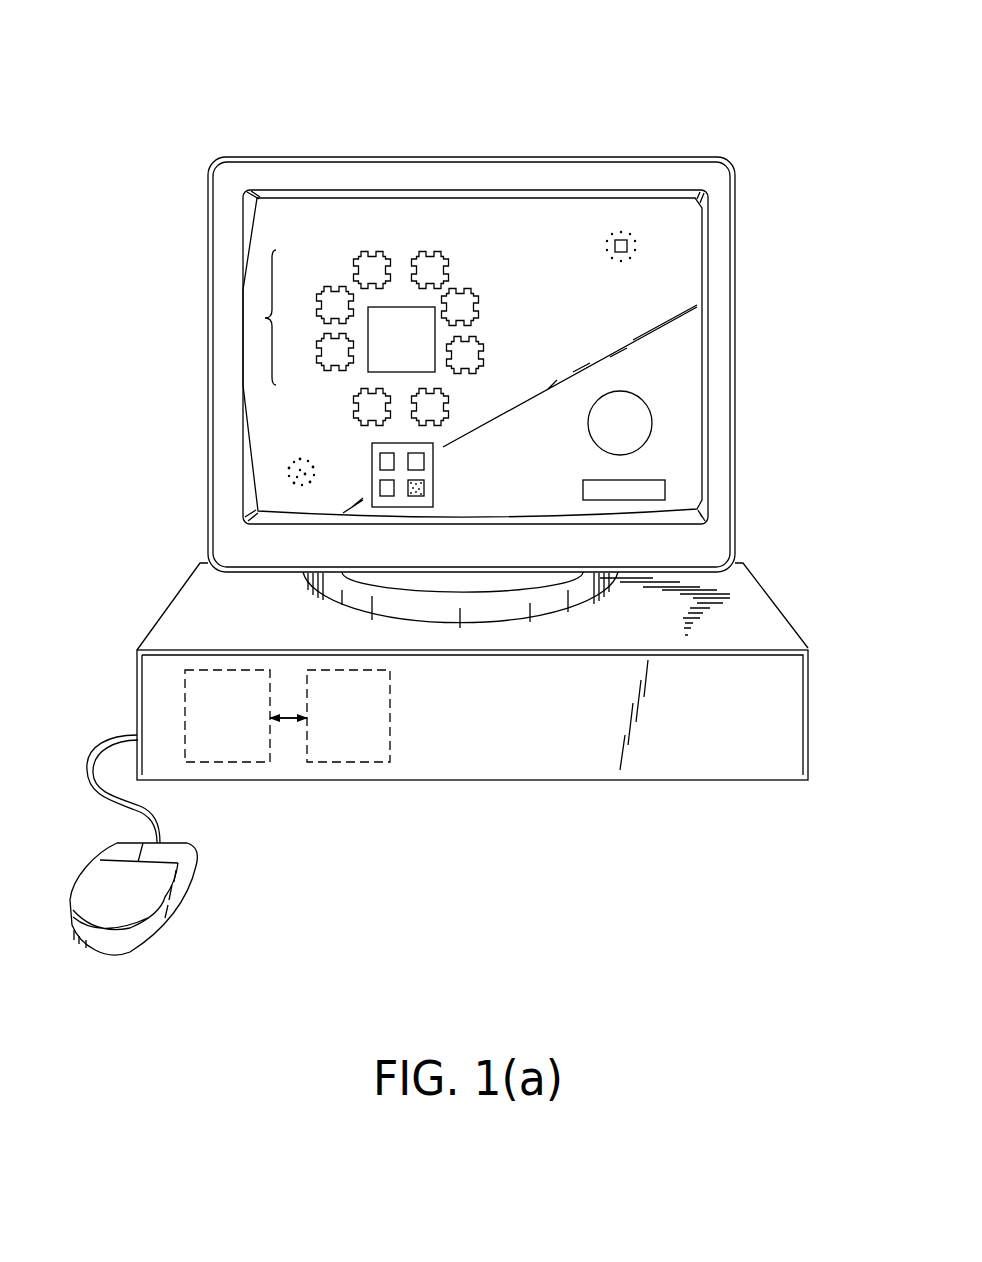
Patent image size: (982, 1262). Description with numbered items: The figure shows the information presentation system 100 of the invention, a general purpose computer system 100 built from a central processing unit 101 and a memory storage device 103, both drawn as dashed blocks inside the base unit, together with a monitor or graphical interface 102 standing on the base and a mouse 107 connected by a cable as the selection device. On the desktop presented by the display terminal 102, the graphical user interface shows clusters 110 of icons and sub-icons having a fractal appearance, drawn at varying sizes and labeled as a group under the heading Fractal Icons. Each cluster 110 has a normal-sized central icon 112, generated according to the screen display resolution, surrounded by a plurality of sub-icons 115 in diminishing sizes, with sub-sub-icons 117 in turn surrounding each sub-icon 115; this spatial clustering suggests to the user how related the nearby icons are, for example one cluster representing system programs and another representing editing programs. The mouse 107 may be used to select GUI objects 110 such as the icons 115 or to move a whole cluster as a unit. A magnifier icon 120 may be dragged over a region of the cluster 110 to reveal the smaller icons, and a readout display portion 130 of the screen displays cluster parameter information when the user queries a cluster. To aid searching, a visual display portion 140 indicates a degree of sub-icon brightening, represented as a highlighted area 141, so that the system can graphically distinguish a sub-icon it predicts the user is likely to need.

The information presentation system 100 is at (217, 115).
The central processing unit 101 is at (245, 762).
The computer monitor or display terminal 102 is at (742, 265).
The memory storage device 103 is at (382, 762).
The mouse 107 is at (188, 893).
The fractal icon cluster 110 is at (348, 320).
The central icon 112 is at (372, 363).
The sub-icon 115 is at (483, 303).
The sub-sub-icon 117 is at (490, 358).
The magnifier icon 120 is at (652, 420).
The readout display portion 130 is at (665, 490).
The visual display portion 140 is at (442, 479).
The highlighted area 141 is at (425, 485).